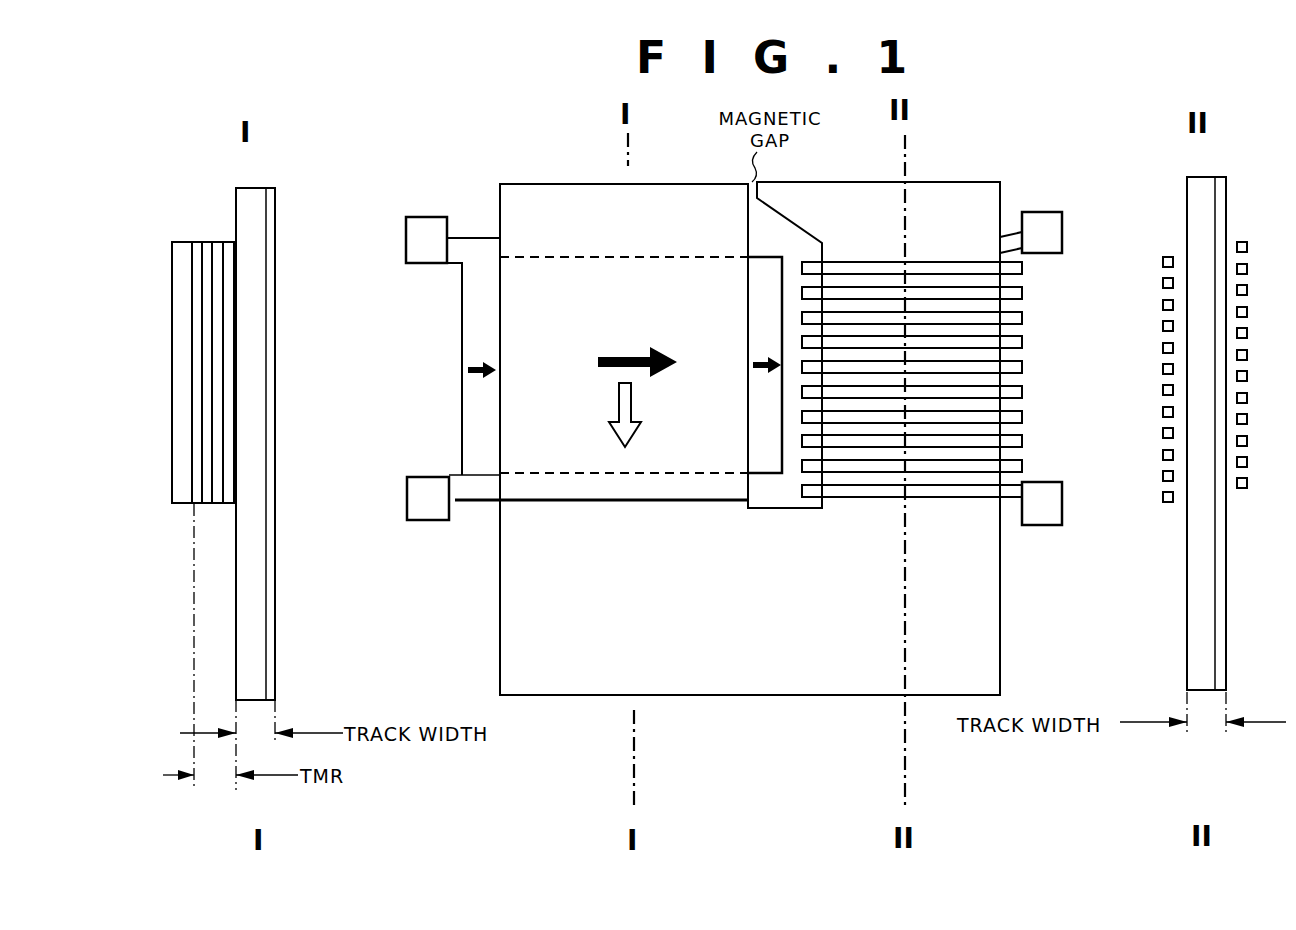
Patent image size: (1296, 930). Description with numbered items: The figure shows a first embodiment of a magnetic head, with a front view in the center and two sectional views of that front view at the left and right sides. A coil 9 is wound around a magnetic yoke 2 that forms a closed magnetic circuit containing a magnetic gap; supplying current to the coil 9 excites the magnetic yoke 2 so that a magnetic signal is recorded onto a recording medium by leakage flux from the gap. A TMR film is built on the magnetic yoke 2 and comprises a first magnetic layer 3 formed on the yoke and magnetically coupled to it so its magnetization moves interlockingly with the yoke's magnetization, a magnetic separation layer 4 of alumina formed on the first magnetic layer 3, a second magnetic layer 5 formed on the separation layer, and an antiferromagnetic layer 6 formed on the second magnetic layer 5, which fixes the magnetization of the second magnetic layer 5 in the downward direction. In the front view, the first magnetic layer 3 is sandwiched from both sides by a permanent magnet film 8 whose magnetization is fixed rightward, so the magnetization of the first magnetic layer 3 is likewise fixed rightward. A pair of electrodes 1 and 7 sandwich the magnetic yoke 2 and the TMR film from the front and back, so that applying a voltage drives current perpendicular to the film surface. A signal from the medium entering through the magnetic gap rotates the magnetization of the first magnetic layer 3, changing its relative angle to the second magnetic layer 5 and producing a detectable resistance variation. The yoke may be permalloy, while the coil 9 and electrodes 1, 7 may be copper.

The electrode 1 is at (262, 621).
The magnetic yoke 2 is at (256, 540).
The first magnetic layer 3 is at (230, 425).
The magnetic separation layer 4 is at (219, 384).
The second magnetic layer 5 is at (208, 348).
The antiferromagnetic layer 6 is at (200, 310).
The electrode 7 is at (183, 268).
The permanent magnet film 8 is at (462, 306).
The coil 9 is at (1025, 316).